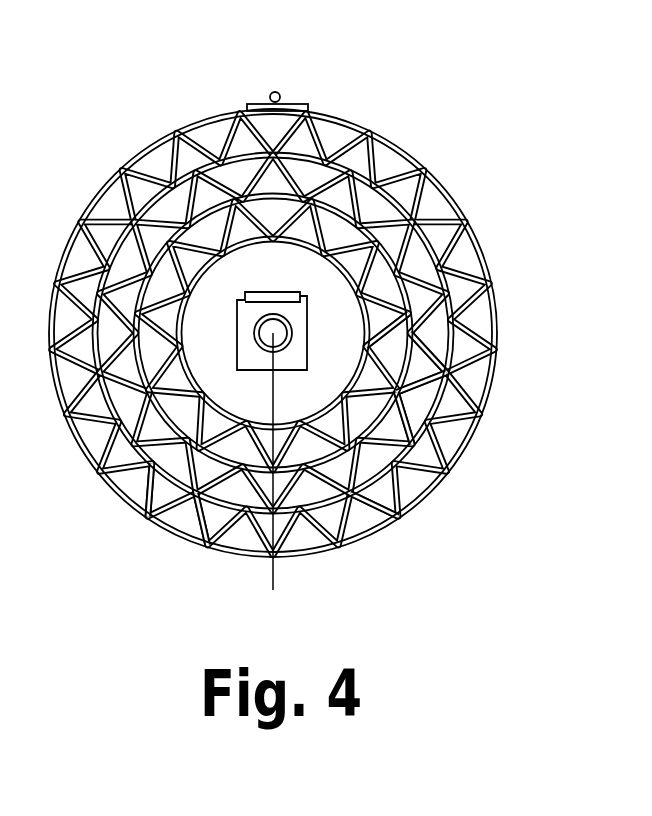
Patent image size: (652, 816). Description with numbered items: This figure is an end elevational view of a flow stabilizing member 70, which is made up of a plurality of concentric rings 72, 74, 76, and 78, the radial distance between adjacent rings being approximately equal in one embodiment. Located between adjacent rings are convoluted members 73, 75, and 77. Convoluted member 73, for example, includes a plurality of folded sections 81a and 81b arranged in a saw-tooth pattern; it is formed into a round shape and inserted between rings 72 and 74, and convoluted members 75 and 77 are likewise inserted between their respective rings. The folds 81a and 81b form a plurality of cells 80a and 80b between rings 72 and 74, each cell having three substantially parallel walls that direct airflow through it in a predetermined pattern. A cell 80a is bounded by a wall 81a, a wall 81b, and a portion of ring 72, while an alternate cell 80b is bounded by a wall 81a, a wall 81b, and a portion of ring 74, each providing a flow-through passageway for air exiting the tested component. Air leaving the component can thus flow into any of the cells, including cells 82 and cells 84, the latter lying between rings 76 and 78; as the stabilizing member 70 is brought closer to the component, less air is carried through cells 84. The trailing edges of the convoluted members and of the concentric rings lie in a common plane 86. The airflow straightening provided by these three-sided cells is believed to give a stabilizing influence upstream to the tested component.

The flow stabilizing member 70 is at (343, 324).
The ring 72 is at (457, 205).
The convoluted member 73 is at (147, 165).
The ring 74 is at (465, 245).
The convoluted member 75 is at (183, 207).
The ring 76 is at (445, 283).
The convoluted member 77 is at (200, 242).
The ring 78 is at (457, 298).
The cell 80a is at (415, 325).
The alternate cell 80b is at (455, 352).
The folded section 81a is at (140, 498).
The folded section 81b is at (180, 538).
The cell 82 is at (420, 393).
The cell 84 is at (365, 418).
The common plane 86 is at (372, 543).